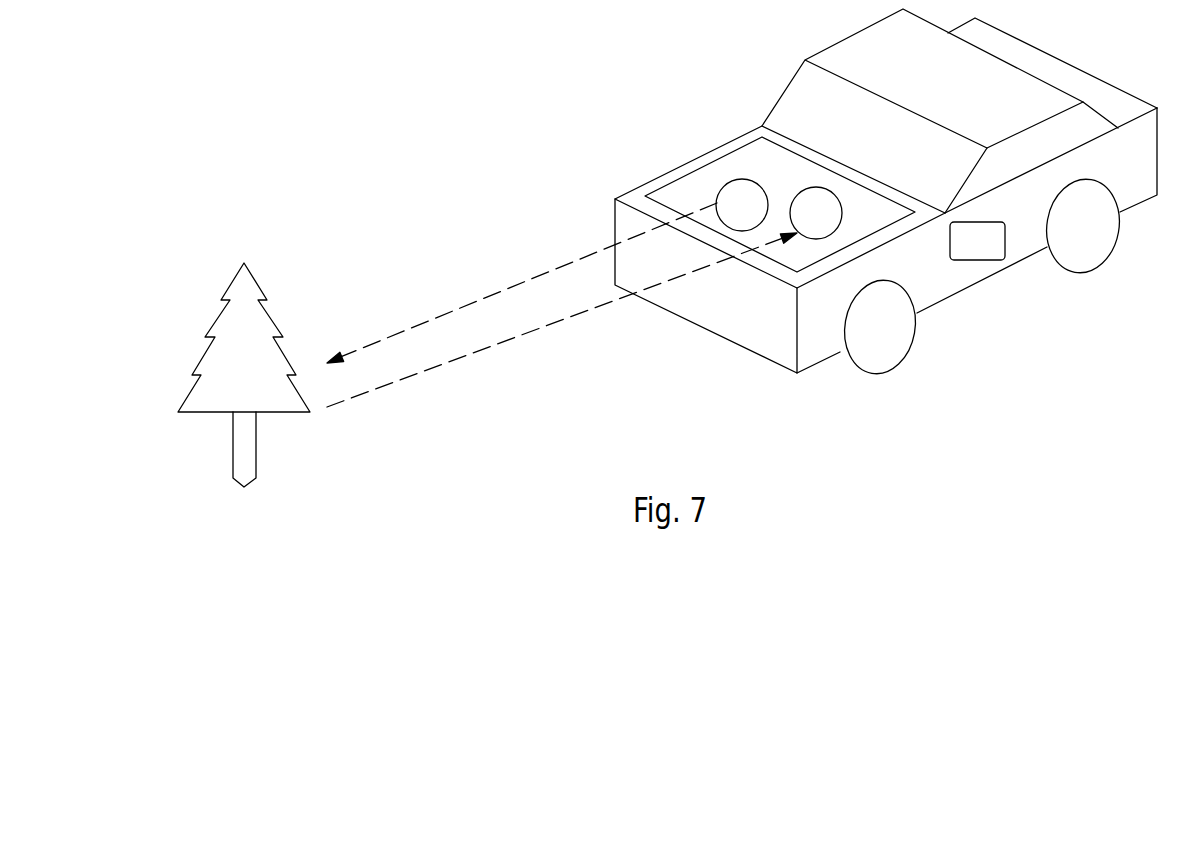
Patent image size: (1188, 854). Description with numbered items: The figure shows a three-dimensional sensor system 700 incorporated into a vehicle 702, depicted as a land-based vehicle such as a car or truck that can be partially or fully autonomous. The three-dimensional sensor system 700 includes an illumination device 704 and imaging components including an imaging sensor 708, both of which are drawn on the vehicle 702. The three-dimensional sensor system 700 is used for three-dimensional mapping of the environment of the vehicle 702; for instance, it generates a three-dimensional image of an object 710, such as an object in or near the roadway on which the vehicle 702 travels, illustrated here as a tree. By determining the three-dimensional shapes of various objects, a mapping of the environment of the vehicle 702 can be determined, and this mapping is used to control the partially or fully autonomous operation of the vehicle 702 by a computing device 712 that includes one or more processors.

The 3D sensor system 700 is at (753, 168).
The vehicle 702 is at (933, 97).
The illumination device 704 is at (742, 205).
The imaging sensor 708 is at (816, 213).
The object 710 is at (244, 391).
The computing device 712 is at (977, 241).